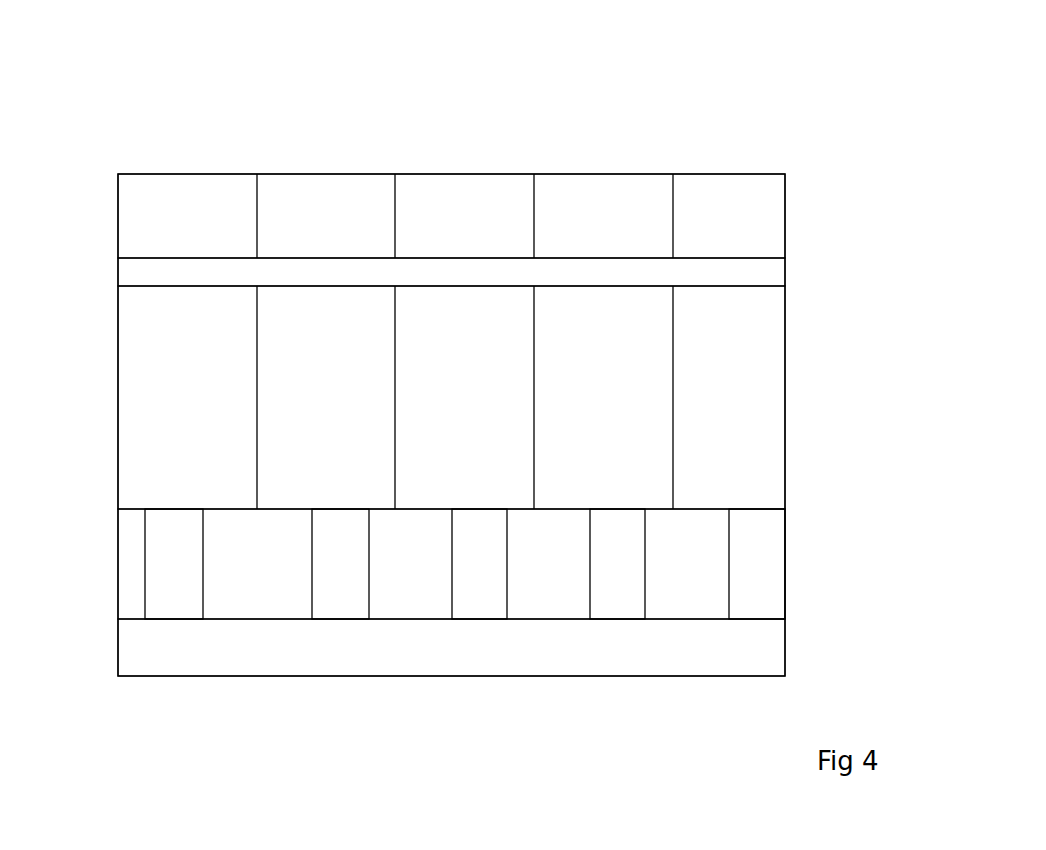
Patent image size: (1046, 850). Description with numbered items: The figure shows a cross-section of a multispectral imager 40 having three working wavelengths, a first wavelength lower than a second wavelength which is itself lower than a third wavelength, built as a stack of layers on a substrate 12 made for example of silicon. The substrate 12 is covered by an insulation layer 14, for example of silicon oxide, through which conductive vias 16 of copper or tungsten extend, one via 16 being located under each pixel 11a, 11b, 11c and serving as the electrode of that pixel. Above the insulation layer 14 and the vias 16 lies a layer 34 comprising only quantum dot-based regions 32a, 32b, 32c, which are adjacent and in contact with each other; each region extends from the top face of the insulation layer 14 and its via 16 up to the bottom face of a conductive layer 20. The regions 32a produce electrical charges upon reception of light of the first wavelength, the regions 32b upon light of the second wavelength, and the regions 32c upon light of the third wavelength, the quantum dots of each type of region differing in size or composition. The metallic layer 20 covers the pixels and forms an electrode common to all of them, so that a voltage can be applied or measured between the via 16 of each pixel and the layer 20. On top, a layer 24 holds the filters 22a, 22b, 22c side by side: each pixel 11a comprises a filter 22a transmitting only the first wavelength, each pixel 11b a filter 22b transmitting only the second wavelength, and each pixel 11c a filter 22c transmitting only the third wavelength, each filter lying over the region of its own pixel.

The multispectral imager 40 is at (848, 86).
The substrate 12 is at (132, 651).
The insulation layer 14 is at (132, 559).
The conductive vias 16 is at (752, 559).
The layer 34 is at (112, 453).
The quantum dot-based region 32a is at (490, 468).
The quantum dot-based region 32b is at (145, 386).
The quantum dot-based region 32c is at (318, 314).
The conductive layer 20 is at (754, 271).
The layer 24 is at (108, 214).
The filter 22a is at (453, 187).
The filter 22b is at (152, 187).
The filter 22c is at (303, 187).
The pixel 11a is at (491, 152).
The pixel 11b is at (214, 150).
The pixel 11c is at (770, 150).